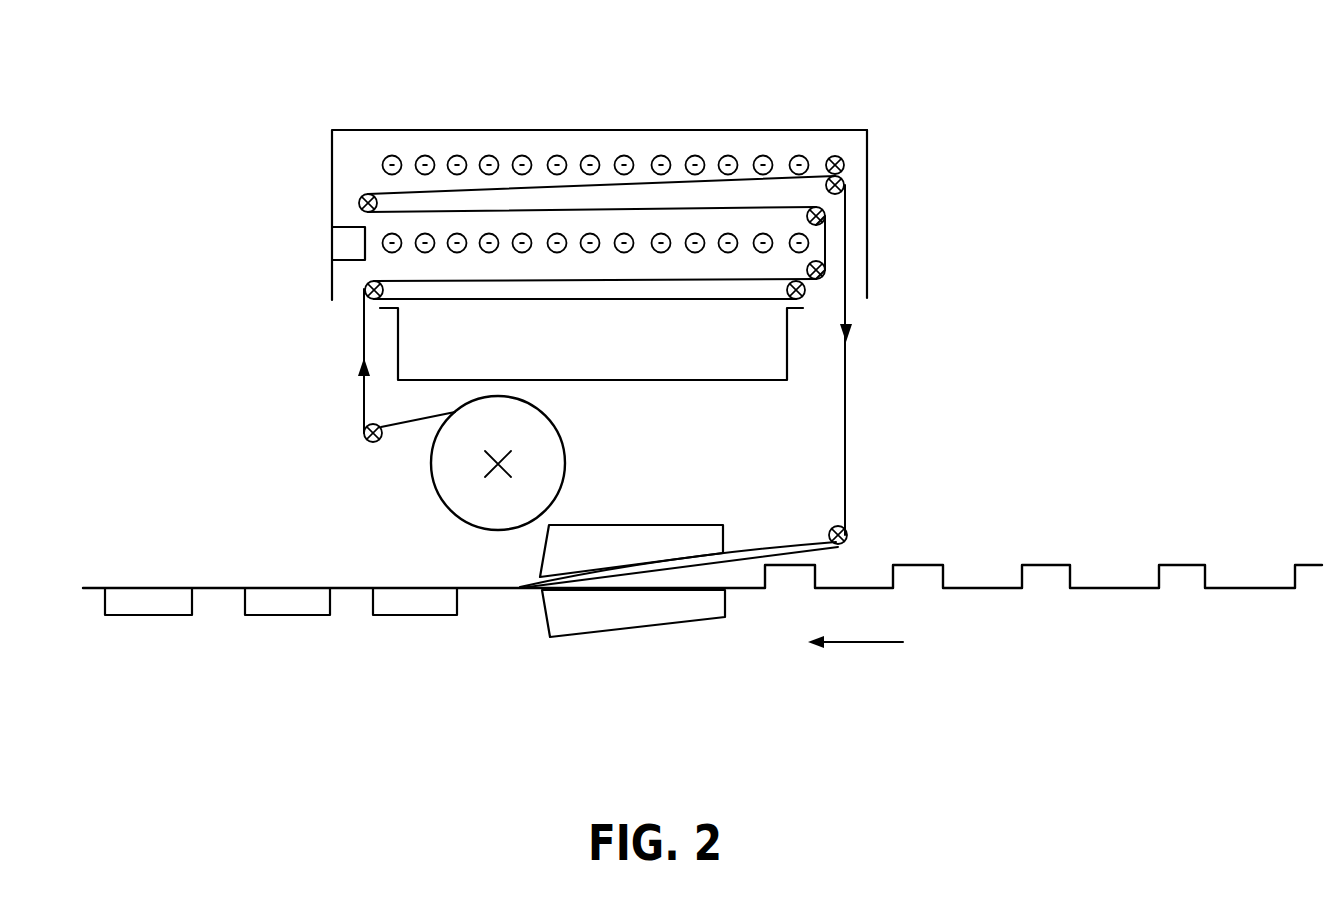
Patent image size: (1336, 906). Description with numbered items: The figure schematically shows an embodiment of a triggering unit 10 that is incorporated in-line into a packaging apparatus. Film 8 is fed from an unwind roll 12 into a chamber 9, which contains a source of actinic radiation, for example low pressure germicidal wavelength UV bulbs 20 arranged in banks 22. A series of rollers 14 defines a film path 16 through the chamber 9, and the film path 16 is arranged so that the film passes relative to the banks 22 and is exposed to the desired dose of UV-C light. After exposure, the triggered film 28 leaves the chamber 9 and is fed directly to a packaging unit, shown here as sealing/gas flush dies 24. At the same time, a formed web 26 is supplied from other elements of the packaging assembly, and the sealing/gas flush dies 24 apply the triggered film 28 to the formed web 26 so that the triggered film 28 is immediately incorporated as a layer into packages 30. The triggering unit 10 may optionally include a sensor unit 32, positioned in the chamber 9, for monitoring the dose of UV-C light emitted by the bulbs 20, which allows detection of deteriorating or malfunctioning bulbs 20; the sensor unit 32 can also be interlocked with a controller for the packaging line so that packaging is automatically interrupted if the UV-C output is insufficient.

The film 8 is at (400, 432).
The chamber 9 is at (289, 145).
The triggering unit 10 is at (885, 110).
The unwind roll 12 is at (446, 503).
The rollers 14 is at (356, 196).
The film path 16 is at (560, 185).
The UV bulbs 20 is at (490, 156).
The banks 22 is at (602, 138).
The sealing/gas flush dies 24 is at (563, 667).
The formed web 26 is at (1118, 550).
The triggered film 28 is at (848, 452).
The packages 30 is at (410, 640).
The sensor unit 32 is at (334, 242).